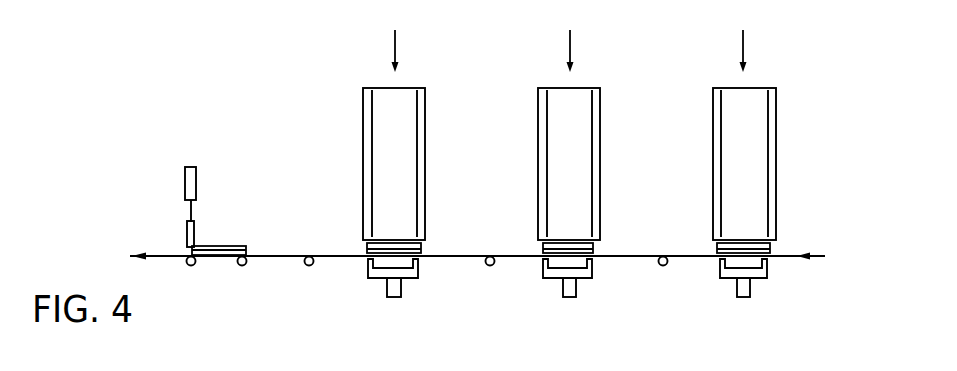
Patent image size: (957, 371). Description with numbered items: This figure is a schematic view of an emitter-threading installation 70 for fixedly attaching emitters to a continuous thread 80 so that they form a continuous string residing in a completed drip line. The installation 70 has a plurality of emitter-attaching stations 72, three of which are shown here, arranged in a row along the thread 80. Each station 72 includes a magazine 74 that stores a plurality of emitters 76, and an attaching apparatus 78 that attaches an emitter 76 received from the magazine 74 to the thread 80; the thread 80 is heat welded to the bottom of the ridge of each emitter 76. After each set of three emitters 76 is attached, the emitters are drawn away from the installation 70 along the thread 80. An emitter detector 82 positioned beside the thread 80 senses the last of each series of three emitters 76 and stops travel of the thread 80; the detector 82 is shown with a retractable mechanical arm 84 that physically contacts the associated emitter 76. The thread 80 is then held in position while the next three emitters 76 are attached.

The emitter-threading installation 70 is at (178, 122).
The emitter-attaching station 72 is at (610, 132).
The magazine 74 is at (600, 178).
The emitter 76 is at (233, 244).
The attaching apparatus 78 is at (540, 262).
The thread 80 is at (627, 257).
The emitter detector 82 is at (208, 182).
The retractable mechanical arm 84 is at (195, 225).